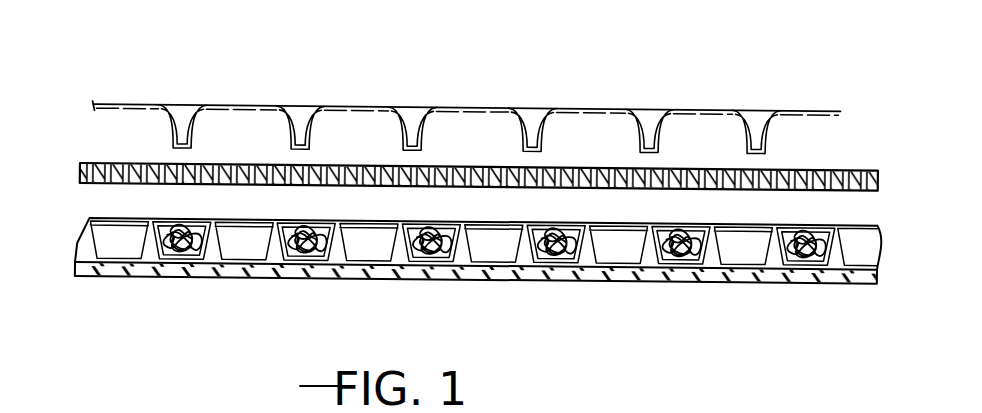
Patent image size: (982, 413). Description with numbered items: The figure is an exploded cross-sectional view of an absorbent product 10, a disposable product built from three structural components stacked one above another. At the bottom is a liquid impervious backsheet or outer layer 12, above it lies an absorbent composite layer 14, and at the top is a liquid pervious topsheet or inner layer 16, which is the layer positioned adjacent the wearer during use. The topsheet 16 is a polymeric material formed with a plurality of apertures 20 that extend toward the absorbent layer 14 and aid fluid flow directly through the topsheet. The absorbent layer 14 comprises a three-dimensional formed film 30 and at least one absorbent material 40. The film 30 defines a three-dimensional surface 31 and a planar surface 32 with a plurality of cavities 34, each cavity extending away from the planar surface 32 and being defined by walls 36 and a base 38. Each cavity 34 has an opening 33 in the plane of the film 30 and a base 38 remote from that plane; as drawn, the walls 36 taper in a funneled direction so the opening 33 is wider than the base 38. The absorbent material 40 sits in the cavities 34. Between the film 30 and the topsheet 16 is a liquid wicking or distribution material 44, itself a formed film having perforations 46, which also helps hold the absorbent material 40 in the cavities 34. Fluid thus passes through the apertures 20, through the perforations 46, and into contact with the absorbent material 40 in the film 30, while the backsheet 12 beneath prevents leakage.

The absorbent product 10 is at (136, 97).
The liquid impervious backsheet 12 is at (400, 281).
The absorbent composite layer 14 is at (71, 224).
The liquid pervious topsheet 16 is at (242, 103).
The apertures 20 is at (305, 124).
The three-dimensional formed film 30 is at (83, 277).
The three-dimensional surface 31 is at (617, 232).
The planar surface 32 is at (114, 222).
The opening 33 is at (434, 223).
The cavities 34 is at (187, 221).
The walls 36 is at (294, 222).
The base 38 is at (192, 253).
The absorbent material 40 is at (317, 247).
The liquid distribution material 44 is at (857, 168).
The perforations 46 is at (812, 167).